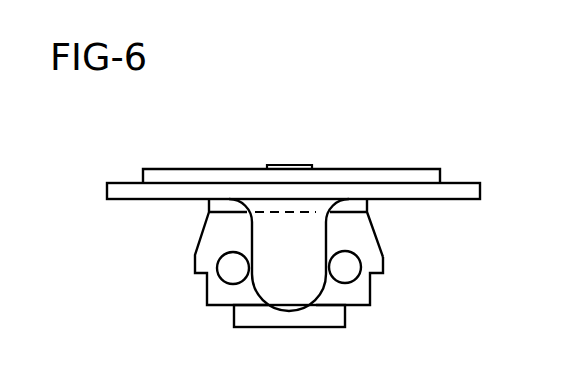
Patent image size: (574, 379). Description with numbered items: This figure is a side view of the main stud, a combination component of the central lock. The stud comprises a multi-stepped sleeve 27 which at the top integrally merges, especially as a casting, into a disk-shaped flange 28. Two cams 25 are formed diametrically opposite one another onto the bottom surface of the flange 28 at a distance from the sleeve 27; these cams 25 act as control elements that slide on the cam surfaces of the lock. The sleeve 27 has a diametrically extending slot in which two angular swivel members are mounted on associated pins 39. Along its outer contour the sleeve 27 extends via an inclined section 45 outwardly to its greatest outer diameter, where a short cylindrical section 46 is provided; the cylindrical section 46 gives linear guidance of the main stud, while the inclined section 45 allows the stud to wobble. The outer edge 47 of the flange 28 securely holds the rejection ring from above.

The cam 25 is at (275, 290).
The multi-stepped sleeve 27 is at (215, 228).
The disk-shaped flange 28 is at (170, 175).
The pin 39 is at (230, 275).
The inclined section 45 is at (375, 229).
The cylindrical section 46 is at (385, 266).
The outer edge 47 is at (122, 188).